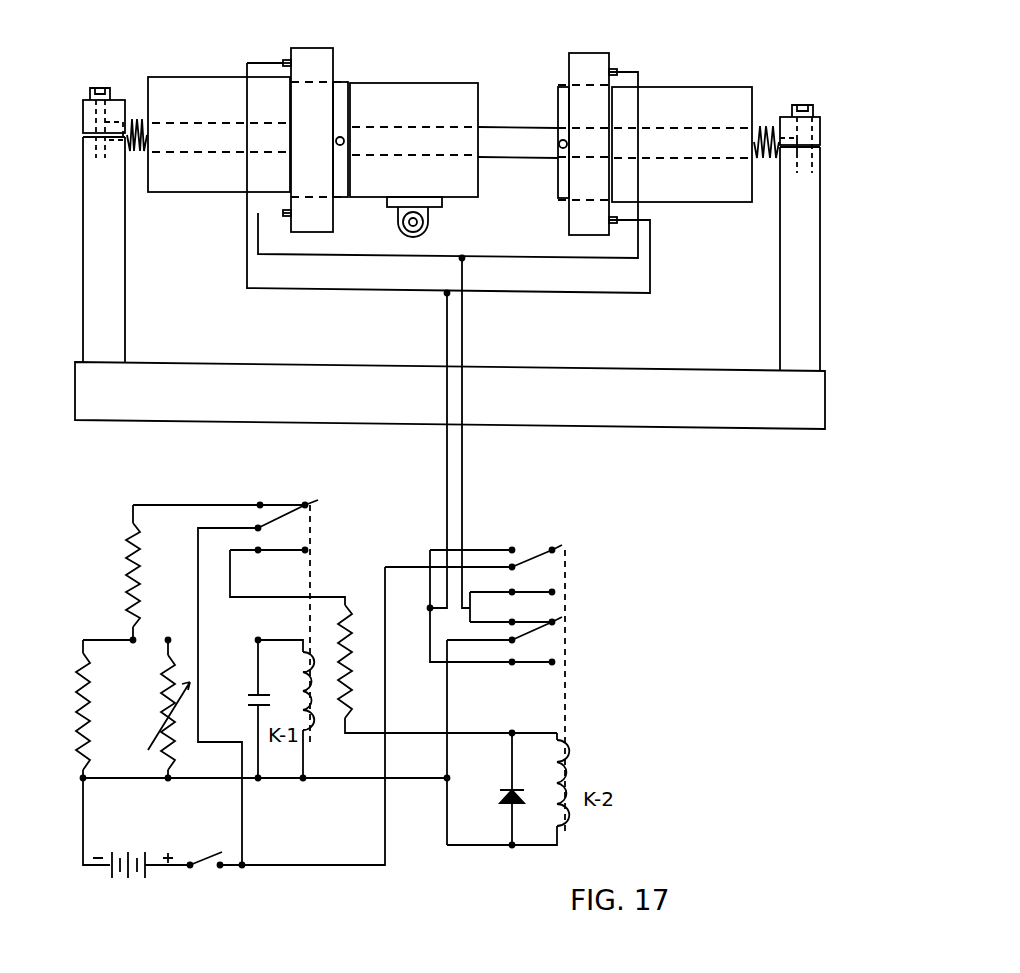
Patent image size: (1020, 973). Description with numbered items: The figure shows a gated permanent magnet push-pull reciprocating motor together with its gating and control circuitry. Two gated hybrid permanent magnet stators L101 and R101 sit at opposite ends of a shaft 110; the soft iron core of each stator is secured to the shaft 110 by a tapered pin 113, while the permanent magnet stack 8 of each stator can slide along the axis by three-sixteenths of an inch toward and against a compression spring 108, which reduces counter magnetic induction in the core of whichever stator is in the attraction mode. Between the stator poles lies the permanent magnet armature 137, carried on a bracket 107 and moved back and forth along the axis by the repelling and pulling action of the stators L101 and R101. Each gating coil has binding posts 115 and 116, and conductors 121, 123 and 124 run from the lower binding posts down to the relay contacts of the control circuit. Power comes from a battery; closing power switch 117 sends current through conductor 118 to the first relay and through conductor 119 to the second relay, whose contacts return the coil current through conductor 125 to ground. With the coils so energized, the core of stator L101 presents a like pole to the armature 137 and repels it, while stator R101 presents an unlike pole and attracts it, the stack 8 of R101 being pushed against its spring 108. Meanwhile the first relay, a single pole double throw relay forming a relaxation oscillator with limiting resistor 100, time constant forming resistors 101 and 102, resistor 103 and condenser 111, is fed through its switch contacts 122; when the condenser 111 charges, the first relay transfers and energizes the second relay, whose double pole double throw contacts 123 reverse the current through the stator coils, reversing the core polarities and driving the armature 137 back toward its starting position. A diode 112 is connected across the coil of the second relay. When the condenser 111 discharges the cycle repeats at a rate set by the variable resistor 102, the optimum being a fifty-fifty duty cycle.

The permanent magnet stack 8 is at (148, 78).
The compression spring 108 is at (140, 152).
The left gated hybrid permanent magnet stator L101 is at (310, 126).
The right gated hybrid permanent magnet stator R101 is at (578, 129).
The permanent magnet armature 137 is at (410, 82).
The shaft 110 is at (530, 127).
The tapered pin 113 is at (560, 147).
The bracket 107 is at (402, 230).
The binding post 115 is at (283, 63).
The binding post 116 is at (280, 215).
The conductor 124 is at (446, 356).
The conductor 121 is at (462, 482).
The limiting resistor 100 is at (128, 527).
The time constant forming resistor 101 is at (83, 650).
The variable resistor 102 is at (166, 700).
The resistor 103 is at (355, 594).
The condenser 111 is at (257, 697).
The switch contacts A-B-C 122 is at (232, 563).
The conductor 123 is at (475, 682).
The diode 112 is at (512, 800).
The conductor 125 is at (203, 779).
The conductor 118 is at (242, 825).
The power switch 117 is at (216, 873).
The conductor 119 is at (385, 836).